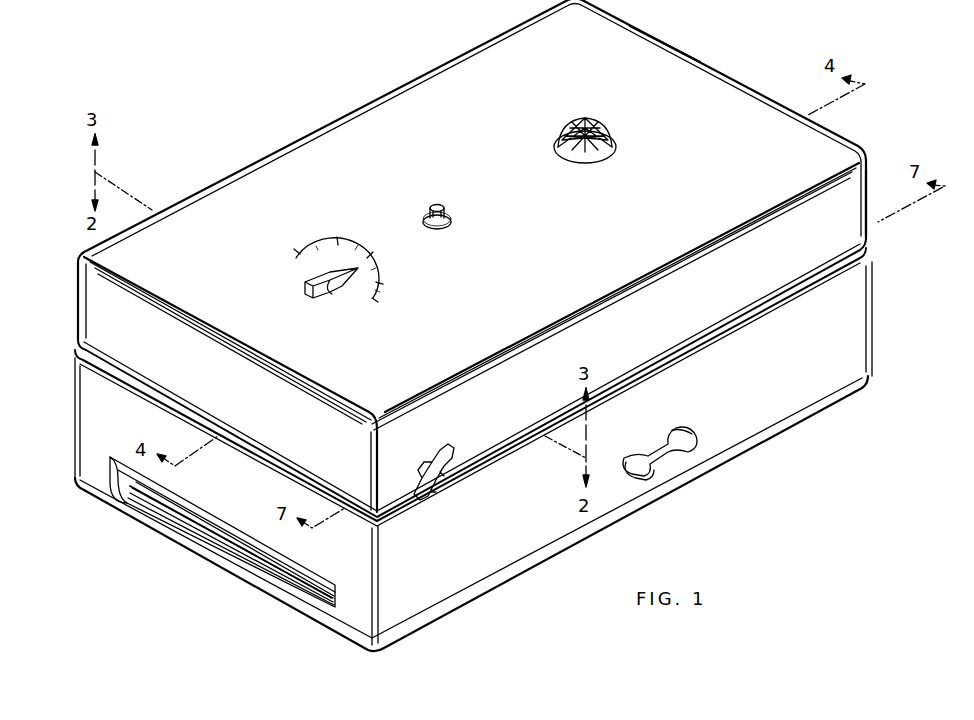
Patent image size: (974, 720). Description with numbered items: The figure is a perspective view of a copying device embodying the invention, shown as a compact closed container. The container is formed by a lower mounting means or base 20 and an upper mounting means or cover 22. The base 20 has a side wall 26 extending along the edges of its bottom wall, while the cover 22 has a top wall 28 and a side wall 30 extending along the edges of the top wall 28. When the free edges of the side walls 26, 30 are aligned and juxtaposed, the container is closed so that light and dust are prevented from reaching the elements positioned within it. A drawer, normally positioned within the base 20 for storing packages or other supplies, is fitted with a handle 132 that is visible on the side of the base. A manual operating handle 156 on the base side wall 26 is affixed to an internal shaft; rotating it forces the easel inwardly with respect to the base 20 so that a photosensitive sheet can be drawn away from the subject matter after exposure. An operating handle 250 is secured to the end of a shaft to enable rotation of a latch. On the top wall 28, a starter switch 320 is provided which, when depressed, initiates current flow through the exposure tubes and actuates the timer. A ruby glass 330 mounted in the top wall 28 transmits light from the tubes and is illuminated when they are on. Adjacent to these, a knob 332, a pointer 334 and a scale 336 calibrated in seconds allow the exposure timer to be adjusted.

The base 20 is at (776, 436).
The cover 22 is at (430, 70).
The side wall 26 is at (497, 556).
The top wall 28 is at (672, 56).
The side wall 30 is at (870, 226).
The handle 132 is at (226, 556).
The manual operating handle 156 is at (640, 458).
The operating handle 250 is at (446, 454).
The starter switch 320 is at (441, 212).
The ruby glass 330 is at (602, 136).
The knob 332 is at (307, 298).
The pointer 334 is at (383, 264).
The scale 336 is at (362, 300).